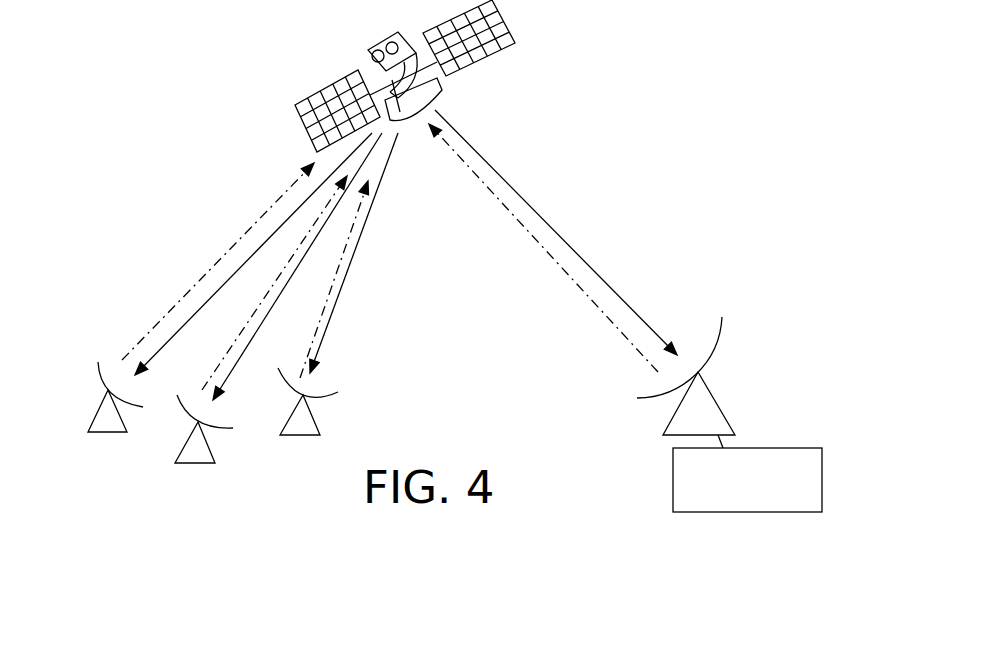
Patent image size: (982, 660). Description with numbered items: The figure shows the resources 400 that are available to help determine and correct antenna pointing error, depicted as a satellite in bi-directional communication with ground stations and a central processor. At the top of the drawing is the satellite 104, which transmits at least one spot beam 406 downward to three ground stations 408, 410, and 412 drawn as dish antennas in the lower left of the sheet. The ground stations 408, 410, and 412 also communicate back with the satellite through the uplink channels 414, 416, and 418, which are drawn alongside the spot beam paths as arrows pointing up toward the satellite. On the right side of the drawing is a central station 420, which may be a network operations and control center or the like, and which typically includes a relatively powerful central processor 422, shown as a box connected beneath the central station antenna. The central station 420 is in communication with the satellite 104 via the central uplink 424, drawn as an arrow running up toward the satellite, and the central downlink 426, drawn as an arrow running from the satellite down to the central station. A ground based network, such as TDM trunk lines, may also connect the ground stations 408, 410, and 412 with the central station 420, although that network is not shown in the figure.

The satellite 104 is at (500, 58).
The resources 400 is at (600, 112).
The spot beam 406 is at (348, 158).
The ground station 408 is at (100, 407).
The ground station 410 is at (177, 455).
The ground station 412 is at (317, 427).
The uplink channel 414 is at (257, 221).
The uplink channel 416 is at (260, 303).
The uplink channel 418 is at (343, 255).
The central station 420 is at (722, 398).
The central processor 422 is at (775, 448).
The central uplink 424 is at (536, 240).
The central downlink 426 is at (557, 233).